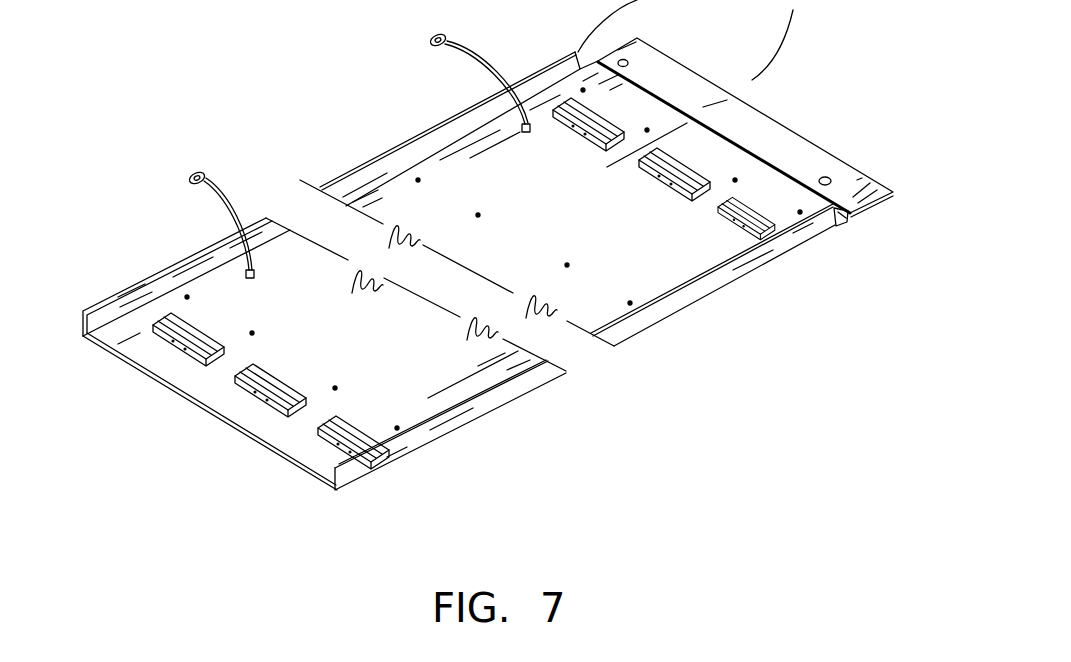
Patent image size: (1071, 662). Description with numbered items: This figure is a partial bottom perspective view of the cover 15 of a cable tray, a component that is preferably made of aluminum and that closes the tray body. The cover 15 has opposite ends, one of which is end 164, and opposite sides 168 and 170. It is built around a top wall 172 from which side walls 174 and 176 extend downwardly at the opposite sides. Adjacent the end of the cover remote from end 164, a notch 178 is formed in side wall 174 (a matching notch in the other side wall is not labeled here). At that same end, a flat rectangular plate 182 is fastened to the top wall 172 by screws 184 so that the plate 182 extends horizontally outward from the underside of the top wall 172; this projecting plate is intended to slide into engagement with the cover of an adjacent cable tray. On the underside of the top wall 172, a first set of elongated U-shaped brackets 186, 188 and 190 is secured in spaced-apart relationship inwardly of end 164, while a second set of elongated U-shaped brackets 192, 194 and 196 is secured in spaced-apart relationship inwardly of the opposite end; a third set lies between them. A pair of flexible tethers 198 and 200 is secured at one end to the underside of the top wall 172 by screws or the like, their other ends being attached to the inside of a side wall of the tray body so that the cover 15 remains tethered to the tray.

The cover 15 is at (467, 453).
The end 164 is at (250, 440).
The side 168 is at (527, 412).
The side 170 is at (270, 182).
The top wall 172 is at (553, 249).
The side wall 174 is at (678, 305).
The side wall 176 is at (418, 140).
The notch 178 is at (843, 222).
The flat rectangular plate 182 is at (790, 143).
The screws 184 is at (830, 176).
The elongated U-shaped bracket 186 is at (325, 445).
The elongated U-shaped bracket 188 is at (240, 385).
The elongated U-shaped bracket 190 is at (183, 344).
The elongated U-shaped bracket 192 is at (737, 221).
The elongated U-shaped bracket 194 is at (672, 179).
The elongated U-shaped bracket 196 is at (580, 130).
The flexible tether 198 is at (182, 224).
The flexible tether 200 is at (518, 119).